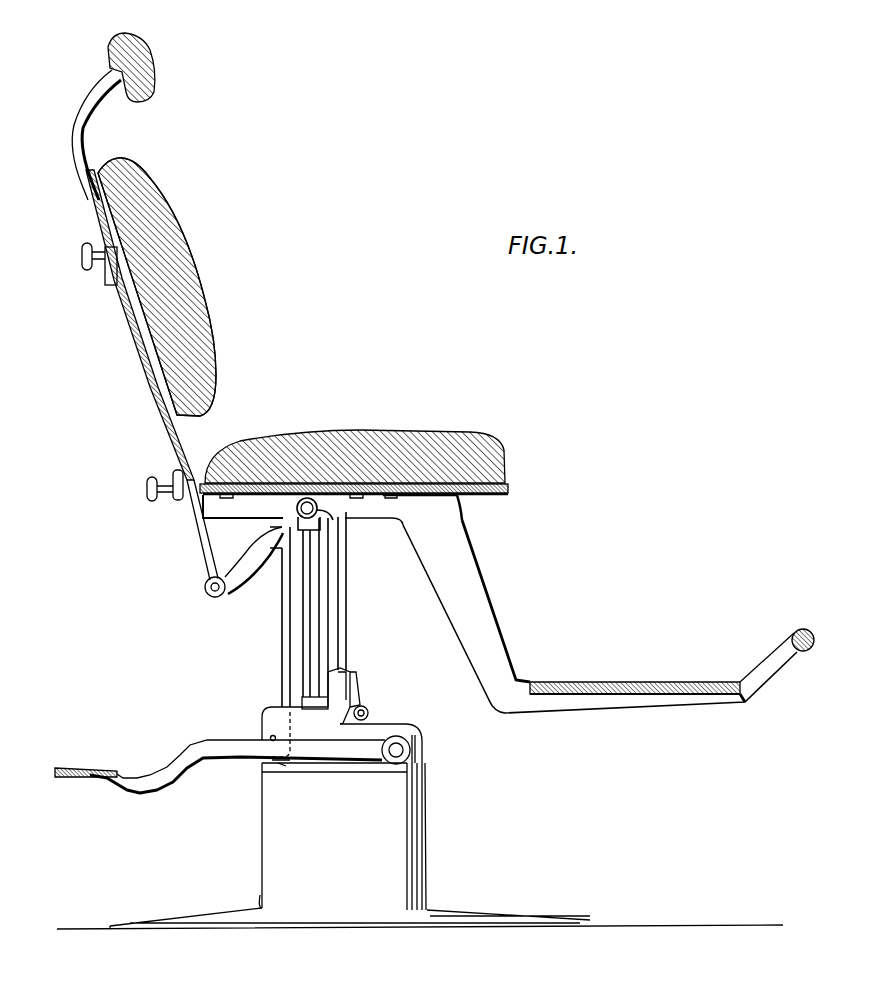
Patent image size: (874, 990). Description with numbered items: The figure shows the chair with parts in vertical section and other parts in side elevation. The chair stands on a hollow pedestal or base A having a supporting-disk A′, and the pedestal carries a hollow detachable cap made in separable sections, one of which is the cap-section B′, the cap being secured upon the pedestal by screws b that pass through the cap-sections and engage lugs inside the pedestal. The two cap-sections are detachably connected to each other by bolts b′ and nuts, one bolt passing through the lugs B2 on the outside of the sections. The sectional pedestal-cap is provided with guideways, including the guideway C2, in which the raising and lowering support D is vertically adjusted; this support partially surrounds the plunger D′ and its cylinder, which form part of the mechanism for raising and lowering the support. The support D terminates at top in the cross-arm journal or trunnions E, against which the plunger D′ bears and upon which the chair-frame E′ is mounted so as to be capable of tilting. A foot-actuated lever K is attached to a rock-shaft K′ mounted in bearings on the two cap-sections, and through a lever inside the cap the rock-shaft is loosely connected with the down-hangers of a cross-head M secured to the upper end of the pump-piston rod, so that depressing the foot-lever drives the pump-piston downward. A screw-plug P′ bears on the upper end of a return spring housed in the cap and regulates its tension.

The chair-frame E′ is at (354, 453).
The cross-arm journal or trunnions E is at (314, 511).
The raising and lowering support D is at (289, 628).
The plunger D′ is at (310, 613).
The guideway C2 is at (346, 680).
The screw-plug P′ is at (350, 683).
The lug B2 is at (375, 687).
The bolt b′ is at (368, 712).
The cap-section B′ is at (413, 720).
The rock-shaft K′ is at (398, 750).
The foot-actuated lever K is at (220, 765).
The cross-head M is at (307, 701).
The hollow pedestal or base A is at (342, 822).
The supporting-disk A′ is at (420, 903).
The screw b is at (282, 763).